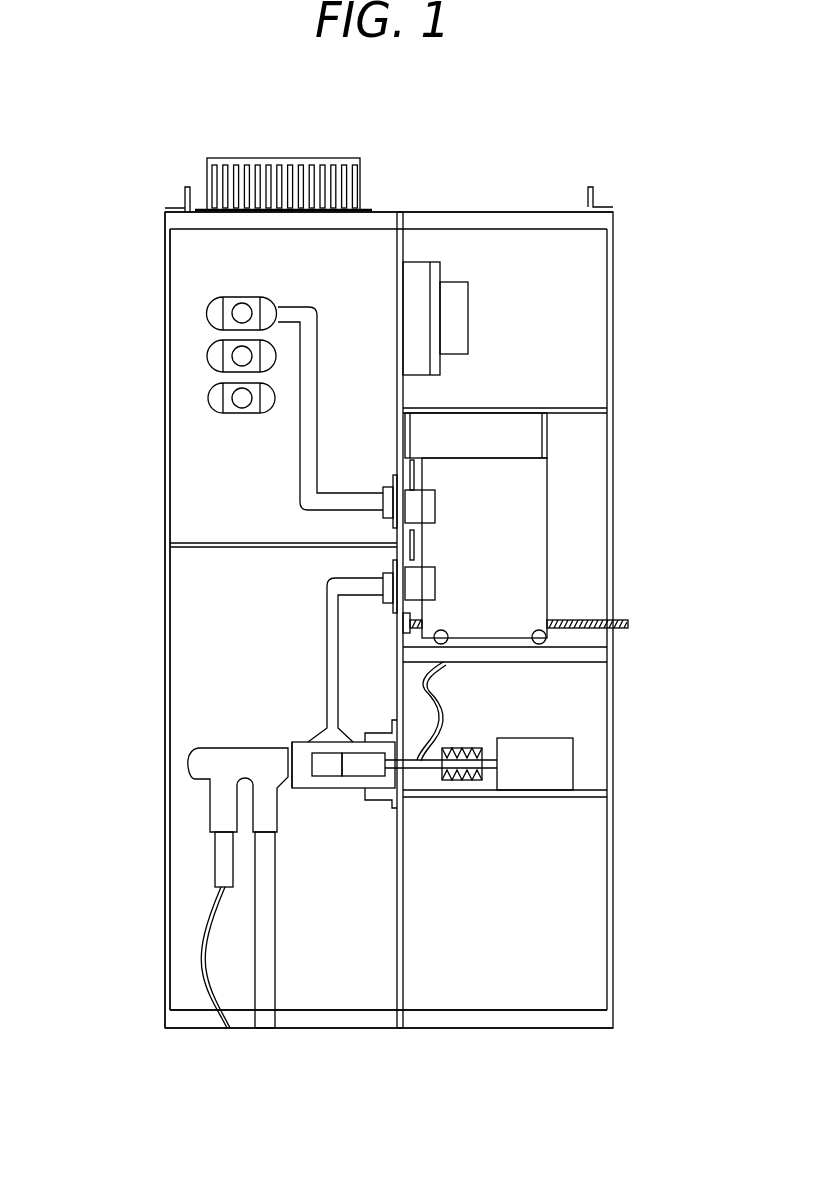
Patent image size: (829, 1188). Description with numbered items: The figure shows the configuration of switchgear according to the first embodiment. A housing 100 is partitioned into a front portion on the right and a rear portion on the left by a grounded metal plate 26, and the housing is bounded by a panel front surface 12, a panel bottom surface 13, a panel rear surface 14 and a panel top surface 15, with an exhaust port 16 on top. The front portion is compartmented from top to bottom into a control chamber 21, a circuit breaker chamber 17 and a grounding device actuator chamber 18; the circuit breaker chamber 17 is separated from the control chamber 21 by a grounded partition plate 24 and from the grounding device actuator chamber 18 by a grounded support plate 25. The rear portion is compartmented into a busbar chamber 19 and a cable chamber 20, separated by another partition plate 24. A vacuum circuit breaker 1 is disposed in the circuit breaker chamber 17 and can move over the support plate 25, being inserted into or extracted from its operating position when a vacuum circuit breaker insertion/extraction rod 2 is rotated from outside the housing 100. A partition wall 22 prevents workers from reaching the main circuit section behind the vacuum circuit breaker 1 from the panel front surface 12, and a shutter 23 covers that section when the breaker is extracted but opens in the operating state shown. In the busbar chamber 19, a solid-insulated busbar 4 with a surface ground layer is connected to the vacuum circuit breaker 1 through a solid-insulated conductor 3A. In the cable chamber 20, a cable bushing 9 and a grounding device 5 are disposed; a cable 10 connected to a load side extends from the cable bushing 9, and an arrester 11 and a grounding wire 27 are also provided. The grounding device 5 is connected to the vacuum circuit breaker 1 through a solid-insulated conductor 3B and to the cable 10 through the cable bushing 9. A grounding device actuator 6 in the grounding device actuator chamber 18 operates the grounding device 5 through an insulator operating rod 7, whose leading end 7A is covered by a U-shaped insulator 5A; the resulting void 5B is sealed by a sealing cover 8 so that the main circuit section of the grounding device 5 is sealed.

The housing 100 is at (615, 240).
The vacuum circuit breaker 1 is at (530, 548).
The vacuum circuit breaker insertion/extraction rod 2 is at (610, 616).
The solid-insulated conductor 3A is at (298, 477).
The solid-insulated conductor 3B is at (322, 625).
The solid-insulated busbar 4 is at (207, 311).
The grounding device 5 is at (292, 745).
The insulator 5A is at (298, 783).
The void 5B is at (325, 770).
The grounding device actuator 6 is at (565, 771).
The insulator operating rod 7 is at (430, 770).
The leading end of insulator operating rod 7A is at (353, 770).
The sealing cover 8 is at (378, 800).
The cable bushing 9 is at (288, 750).
The cable 10 is at (253, 985).
The arrester 11 is at (215, 860).
The panel front surface 12 is at (613, 944).
The panel bottom surface 13 is at (563, 1028).
The panel rear surface 14 is at (165, 795).
The panel top surface 15 is at (500, 212).
The exhaust port 16 is at (308, 160).
The circuit breaker chamber 17 is at (598, 484).
The grounding device actuator chamber 18 is at (598, 684).
The busbar chamber 19 is at (188, 386).
The cable chamber 20 is at (180, 913).
The control chamber 21 is at (580, 300).
The partition wall 22 is at (552, 440).
The shutter 23 is at (420, 462).
The partition plate 24 is at (222, 543).
The support plate 25 is at (597, 653).
The grounded metal plate 26 is at (403, 973).
The grounding wire 27 is at (440, 726).